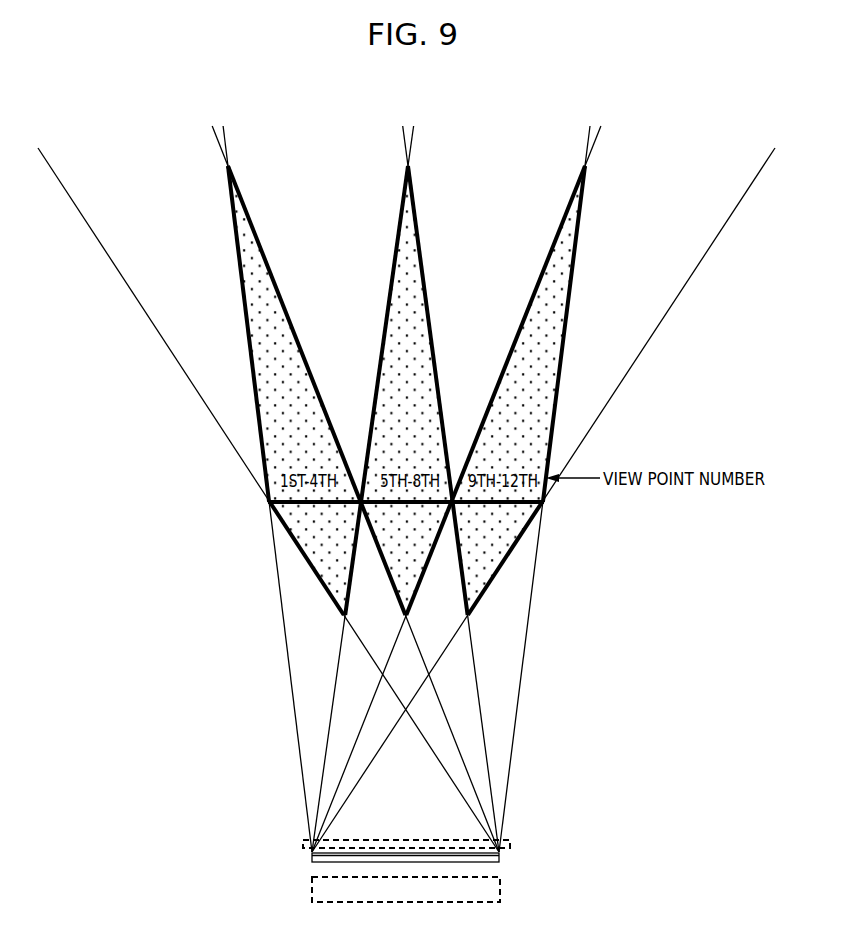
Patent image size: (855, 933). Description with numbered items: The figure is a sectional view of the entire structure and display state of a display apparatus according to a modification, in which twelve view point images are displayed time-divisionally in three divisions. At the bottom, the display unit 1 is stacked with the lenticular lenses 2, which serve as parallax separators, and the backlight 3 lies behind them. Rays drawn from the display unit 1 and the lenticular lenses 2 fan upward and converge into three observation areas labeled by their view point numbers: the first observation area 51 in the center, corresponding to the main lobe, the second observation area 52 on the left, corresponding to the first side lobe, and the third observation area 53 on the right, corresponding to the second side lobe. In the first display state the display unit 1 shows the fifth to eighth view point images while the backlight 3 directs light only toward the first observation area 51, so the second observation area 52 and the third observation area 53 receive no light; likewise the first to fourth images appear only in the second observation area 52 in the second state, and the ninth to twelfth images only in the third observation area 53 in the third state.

The display unit 1 is at (500, 858).
The lenticular lenses 2 is at (511, 843).
The backlight 3 is at (503, 890).
The first observation area 51 is at (418, 298).
The second observation area 52 is at (281, 426).
The third observation area 53 is at (542, 392).